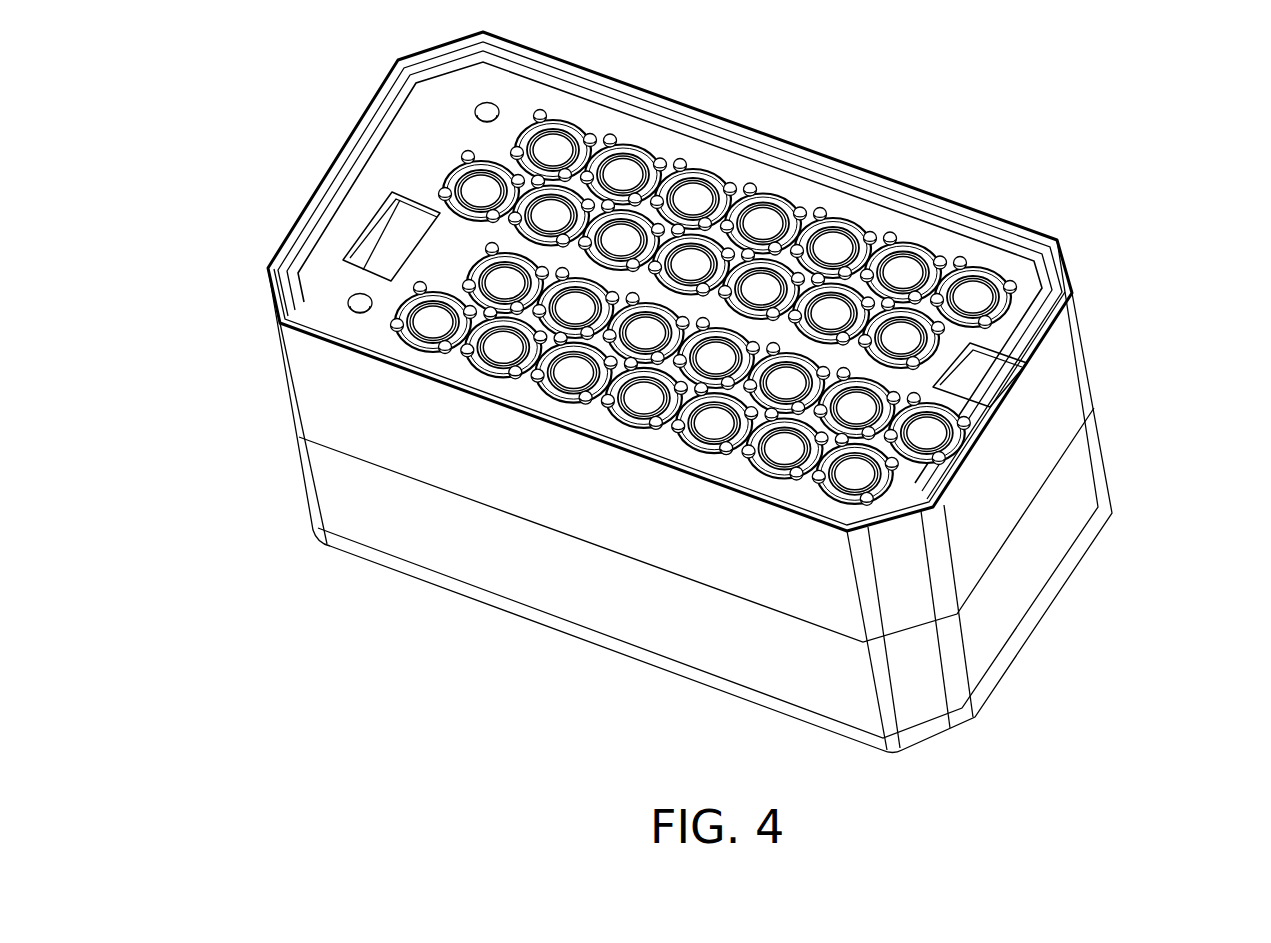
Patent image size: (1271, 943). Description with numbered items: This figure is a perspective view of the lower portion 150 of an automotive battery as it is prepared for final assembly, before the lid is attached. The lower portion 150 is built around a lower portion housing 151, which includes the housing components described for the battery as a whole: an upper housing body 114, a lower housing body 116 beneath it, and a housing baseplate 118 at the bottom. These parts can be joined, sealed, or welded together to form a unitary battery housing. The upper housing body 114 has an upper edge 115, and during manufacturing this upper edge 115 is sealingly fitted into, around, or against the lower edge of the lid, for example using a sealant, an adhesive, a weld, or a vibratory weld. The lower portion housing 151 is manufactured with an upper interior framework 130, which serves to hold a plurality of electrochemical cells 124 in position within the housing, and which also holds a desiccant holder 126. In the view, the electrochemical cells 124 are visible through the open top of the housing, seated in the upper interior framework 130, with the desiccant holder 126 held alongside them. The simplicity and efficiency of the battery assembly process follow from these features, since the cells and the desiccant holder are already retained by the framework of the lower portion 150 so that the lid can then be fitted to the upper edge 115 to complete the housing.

The upper housing body 114 is at (1067, 357).
The upper edge 115 is at (397, 60).
The lower housing body 116 is at (373, 493).
The housing baseplate 118 is at (475, 600).
The electrochemical cells 124 is at (763, 227).
The desiccant holder 126 is at (987, 383).
The upper interior framework 130 is at (365, 316).
The lower portion 150 is at (722, 281).
The lower portion housing 151 is at (1062, 615).